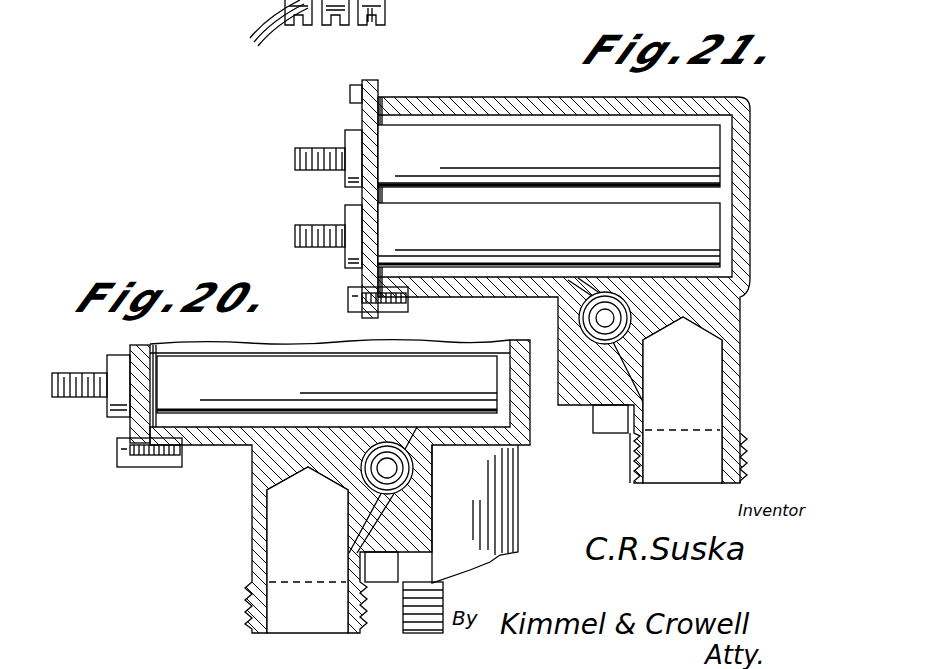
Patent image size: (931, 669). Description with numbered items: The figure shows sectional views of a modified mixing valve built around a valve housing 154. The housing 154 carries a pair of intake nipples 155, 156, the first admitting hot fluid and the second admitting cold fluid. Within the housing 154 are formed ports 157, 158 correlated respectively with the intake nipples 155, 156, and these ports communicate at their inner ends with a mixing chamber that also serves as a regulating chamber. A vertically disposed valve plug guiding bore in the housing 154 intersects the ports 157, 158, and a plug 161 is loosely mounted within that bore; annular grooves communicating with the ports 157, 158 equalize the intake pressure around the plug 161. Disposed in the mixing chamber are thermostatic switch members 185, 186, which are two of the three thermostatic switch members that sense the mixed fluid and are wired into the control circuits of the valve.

In FIG. 21, the valve housing 154 is at (742, 250).
In FIG. 20, the intake nipple 155 is at (252, 545).
In FIG. 21, the intake nipple 156 is at (740, 388).
In FIG. 20, the intake nipple 156 is at (518, 500).
In FIG. 20, the port 157 is at (355, 530).
In FIG. 21, the port 158 is at (625, 378).
In FIG. 21, the plug 161 is at (605, 300).
In FIG. 20, the plug 161 is at (352, 512).
In FIG. 21, the thermostatic switch member 185 is at (708, 213).
In FIG. 20, the thermostatic switch member 185 is at (305, 362).
In FIG. 21, the thermostatic switch member 186 is at (478, 130).